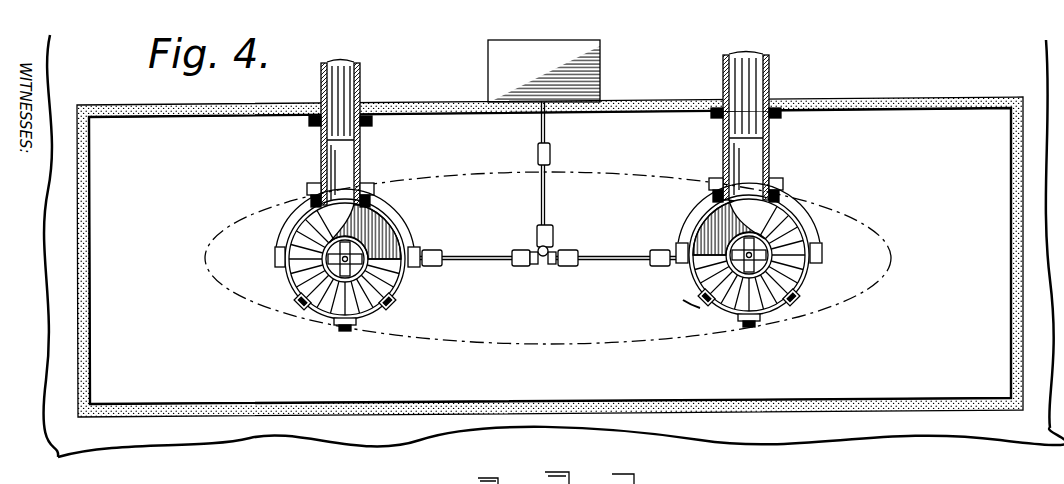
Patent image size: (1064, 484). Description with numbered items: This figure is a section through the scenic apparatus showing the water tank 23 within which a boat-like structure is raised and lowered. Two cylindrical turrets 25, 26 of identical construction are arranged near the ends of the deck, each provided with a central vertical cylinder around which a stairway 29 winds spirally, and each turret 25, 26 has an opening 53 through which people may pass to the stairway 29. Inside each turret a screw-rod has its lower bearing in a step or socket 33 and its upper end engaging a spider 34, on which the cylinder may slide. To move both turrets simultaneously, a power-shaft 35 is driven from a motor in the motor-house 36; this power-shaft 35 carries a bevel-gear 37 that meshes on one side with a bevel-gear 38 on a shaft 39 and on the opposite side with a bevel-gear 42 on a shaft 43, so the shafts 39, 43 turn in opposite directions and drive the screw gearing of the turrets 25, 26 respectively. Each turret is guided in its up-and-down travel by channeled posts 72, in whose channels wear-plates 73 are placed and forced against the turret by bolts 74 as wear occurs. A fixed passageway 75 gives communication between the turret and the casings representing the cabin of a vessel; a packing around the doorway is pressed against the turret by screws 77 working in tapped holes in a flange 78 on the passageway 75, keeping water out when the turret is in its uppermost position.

The tank 23 is at (550, 257).
The turret 25 is at (290, 243).
The turret 26 is at (815, 276).
The stairway 29 is at (388, 287).
The step or socket 33 is at (339, 207).
The spider 34 is at (353, 236).
The power-shaft 35 is at (547, 203).
The motor-house 36 is at (601, 47).
The bevel-gear 37 is at (549, 250).
The bevel-gear 38 is at (536, 265).
The shaft 39 is at (466, 262).
The bevel-gear 42 is at (550, 265).
The shaft 43 is at (611, 261).
The opening 53 is at (852, 223).
The channeled post 72 is at (798, 300).
The wear-plate 73 is at (683, 300).
The bolt 74 is at (704, 311).
The fixed passageway 75 is at (321, 166).
The screw 77 is at (782, 194).
The flange 78 is at (781, 199).